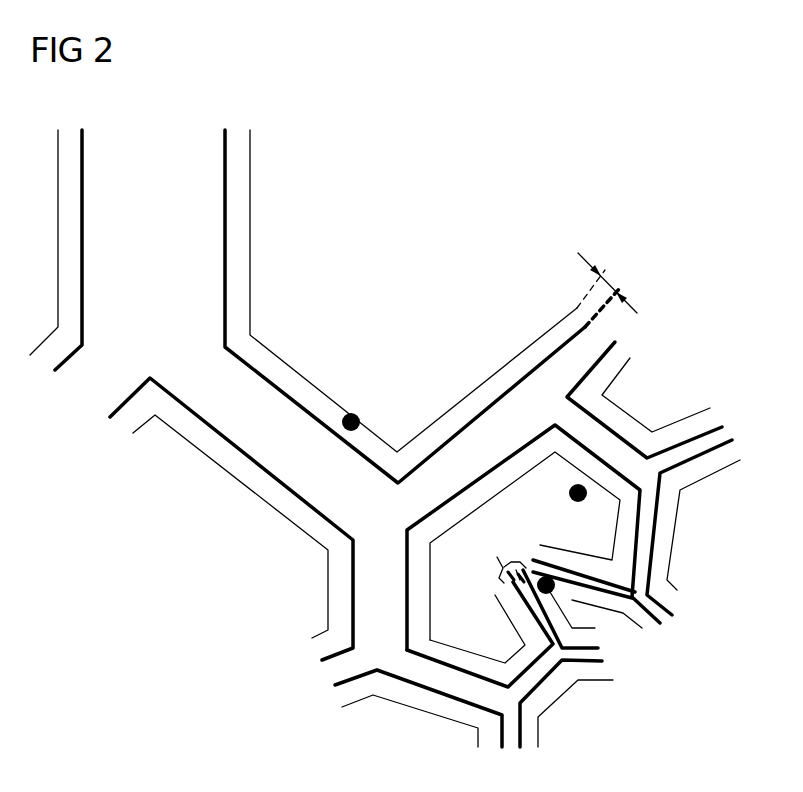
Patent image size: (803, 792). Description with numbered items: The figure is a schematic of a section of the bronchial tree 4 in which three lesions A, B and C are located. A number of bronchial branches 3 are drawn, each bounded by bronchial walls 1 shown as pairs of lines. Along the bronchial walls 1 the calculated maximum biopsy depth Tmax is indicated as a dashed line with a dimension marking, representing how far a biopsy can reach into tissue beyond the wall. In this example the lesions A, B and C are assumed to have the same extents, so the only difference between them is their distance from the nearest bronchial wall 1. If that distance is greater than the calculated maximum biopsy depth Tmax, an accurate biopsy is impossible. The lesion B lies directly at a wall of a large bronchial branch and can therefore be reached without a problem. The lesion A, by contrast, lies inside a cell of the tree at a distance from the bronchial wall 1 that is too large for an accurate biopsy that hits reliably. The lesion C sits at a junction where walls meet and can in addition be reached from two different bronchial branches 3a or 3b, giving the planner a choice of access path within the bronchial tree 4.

The bronchial wall 1 is at (83, 190).
The bronchial branch 3 is at (95, 430).
The bronchial branch 3a is at (504, 570).
The bronchial branch 3b is at (517, 567).
The bronchial tree 4 is at (634, 158).
The lesion A is at (576, 488).
The lesion B is at (353, 414).
The lesion C is at (548, 577).
The maximum biopsy depth Tmax is at (612, 282).